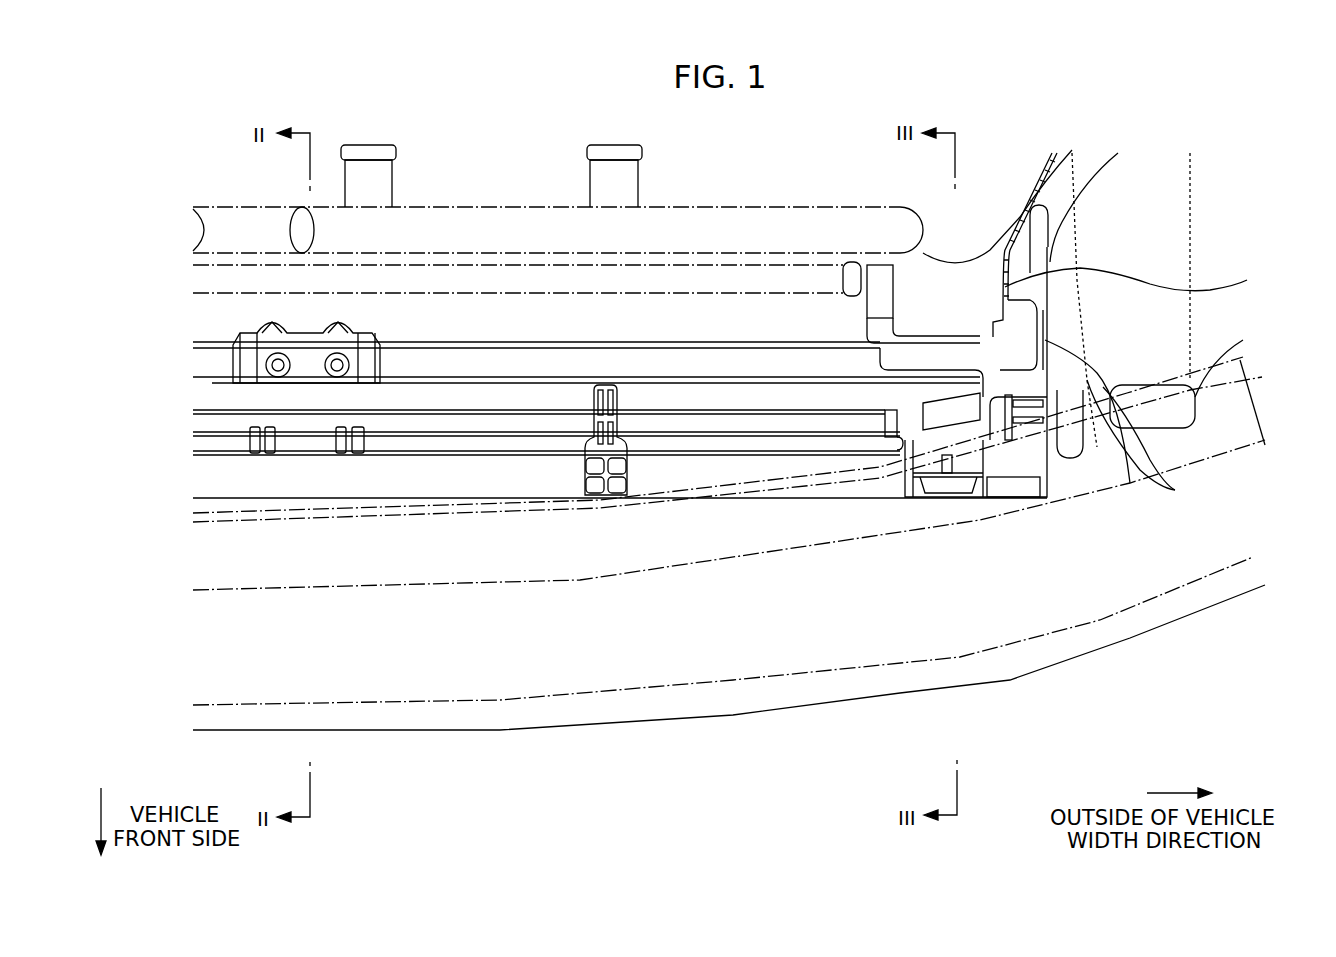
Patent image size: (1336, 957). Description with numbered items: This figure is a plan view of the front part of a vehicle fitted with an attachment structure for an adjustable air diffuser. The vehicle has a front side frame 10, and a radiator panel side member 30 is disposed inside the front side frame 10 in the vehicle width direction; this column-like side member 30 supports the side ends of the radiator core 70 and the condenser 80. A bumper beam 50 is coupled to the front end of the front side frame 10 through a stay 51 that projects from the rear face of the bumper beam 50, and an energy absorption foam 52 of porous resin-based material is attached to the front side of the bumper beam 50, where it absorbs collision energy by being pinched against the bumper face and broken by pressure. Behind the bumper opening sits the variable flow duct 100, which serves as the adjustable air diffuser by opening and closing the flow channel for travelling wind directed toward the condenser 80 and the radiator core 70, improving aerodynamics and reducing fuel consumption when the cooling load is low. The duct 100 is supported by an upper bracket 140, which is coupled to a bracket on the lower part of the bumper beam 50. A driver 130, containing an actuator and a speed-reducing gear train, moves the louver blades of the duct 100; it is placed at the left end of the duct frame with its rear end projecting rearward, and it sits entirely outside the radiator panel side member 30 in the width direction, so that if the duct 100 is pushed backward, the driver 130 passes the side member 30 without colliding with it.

The front side frame 10 is at (1190, 212).
The radiator panel side member 30 is at (1100, 298).
The bumper beam 50 is at (730, 567).
The stay 51 is at (1243, 340).
The energy absorption foam 52 is at (827, 673).
The radiator core 70 is at (830, 207).
The condenser 80 is at (740, 263).
The variable flow duct 100 is at (530, 497).
The driver 130 is at (1175, 490).
The upper bracket 140 is at (983, 500).